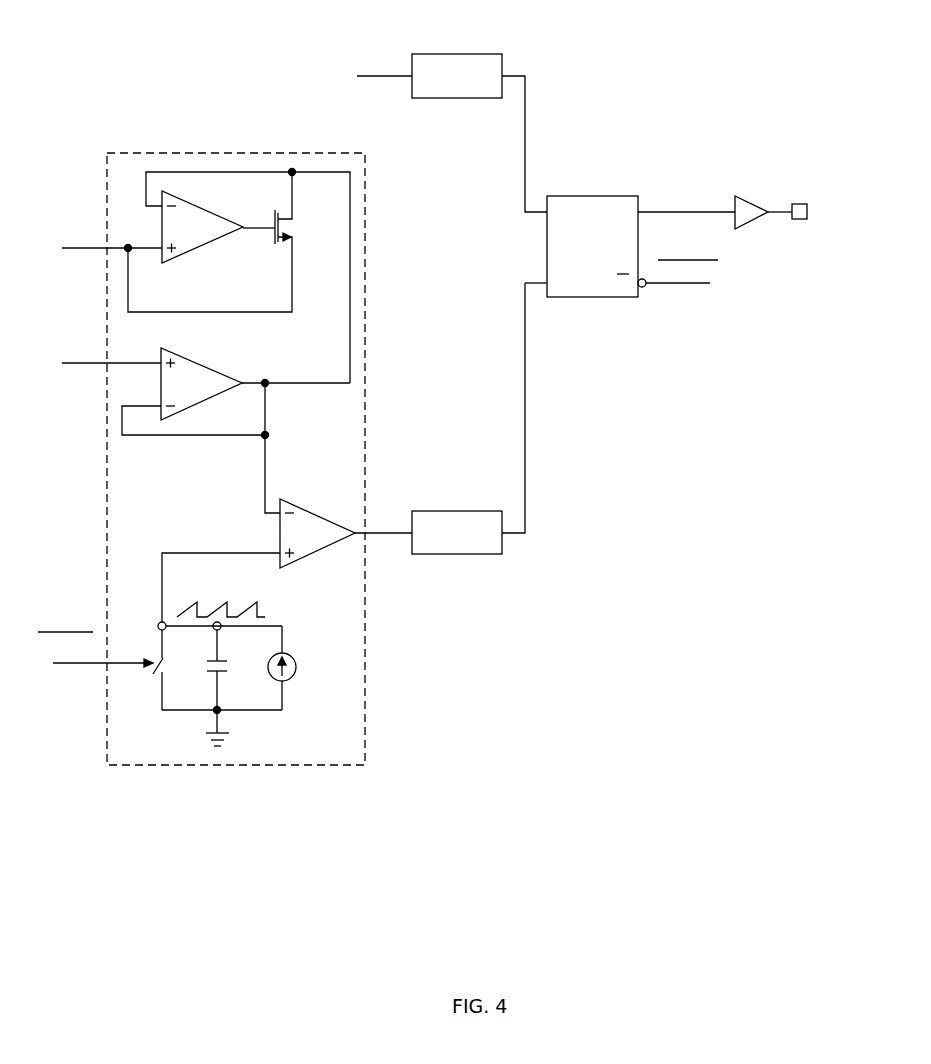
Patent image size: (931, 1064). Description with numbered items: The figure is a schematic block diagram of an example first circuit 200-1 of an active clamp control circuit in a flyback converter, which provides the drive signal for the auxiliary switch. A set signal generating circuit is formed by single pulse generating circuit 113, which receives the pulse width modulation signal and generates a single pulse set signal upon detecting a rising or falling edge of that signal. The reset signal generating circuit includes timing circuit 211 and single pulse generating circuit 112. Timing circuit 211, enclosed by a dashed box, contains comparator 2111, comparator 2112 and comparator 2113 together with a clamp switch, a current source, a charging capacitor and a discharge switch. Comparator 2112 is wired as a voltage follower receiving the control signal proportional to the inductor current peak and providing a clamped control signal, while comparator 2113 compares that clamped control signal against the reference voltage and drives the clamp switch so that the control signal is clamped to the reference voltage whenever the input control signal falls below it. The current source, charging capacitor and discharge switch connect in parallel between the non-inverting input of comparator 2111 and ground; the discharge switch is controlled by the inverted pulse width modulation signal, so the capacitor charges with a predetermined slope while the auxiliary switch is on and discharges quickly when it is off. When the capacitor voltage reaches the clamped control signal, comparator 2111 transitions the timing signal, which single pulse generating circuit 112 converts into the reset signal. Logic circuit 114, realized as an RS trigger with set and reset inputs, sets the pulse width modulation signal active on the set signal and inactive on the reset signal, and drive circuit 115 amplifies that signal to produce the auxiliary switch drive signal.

The first circuit 200-1 is at (719, 737).
The timing circuit 211 is at (365, 711).
The comparator 2111 is at (337, 523).
The comparator 2112 is at (207, 365).
The comparator 2113 is at (190, 202).
The single pulse generating circuit 112 is at (443, 511).
The single pulse generating circuit 113 is at (463, 98).
The logic circuit 114 is at (604, 196).
The drive circuit 115 is at (758, 200).